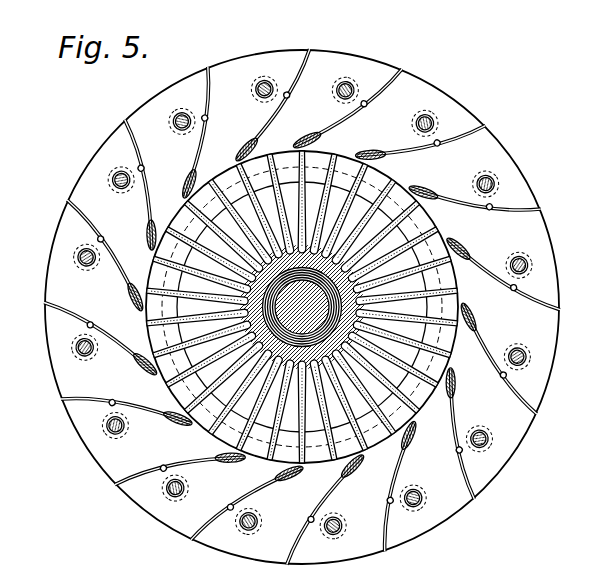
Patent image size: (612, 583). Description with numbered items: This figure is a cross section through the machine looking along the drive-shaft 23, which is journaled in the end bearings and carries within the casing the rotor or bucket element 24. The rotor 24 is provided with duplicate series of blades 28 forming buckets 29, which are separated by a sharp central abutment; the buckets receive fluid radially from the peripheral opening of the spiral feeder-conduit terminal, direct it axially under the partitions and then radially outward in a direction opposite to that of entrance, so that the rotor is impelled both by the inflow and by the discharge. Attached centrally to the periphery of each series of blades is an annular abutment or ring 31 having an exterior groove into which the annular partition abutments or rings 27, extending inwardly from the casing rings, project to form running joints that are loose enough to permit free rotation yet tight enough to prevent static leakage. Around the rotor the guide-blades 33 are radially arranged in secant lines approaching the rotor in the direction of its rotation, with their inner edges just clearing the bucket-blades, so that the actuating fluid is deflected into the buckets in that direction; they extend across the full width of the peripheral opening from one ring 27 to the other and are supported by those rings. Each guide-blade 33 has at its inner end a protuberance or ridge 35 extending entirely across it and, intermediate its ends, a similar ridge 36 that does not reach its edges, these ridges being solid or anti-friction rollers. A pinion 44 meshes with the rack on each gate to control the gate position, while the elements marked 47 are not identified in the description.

The drive-shaft 23 is at (302, 307).
The rotor or bucket element 24 is at (262, 349).
The annular partition abutments or rings 27 is at (508, 163).
The blades 28 is at (184, 294).
The buckets 29 is at (302, 307).
The annular abutment or ring 31 is at (162, 375).
The guide-blades 33 is at (465, 206).
The protuberance or ridge 35 is at (418, 188).
The protuberance or ridge 36 is at (484, 208).
The pinion 44 is at (498, 193).
The rivet 47 is at (513, 259).